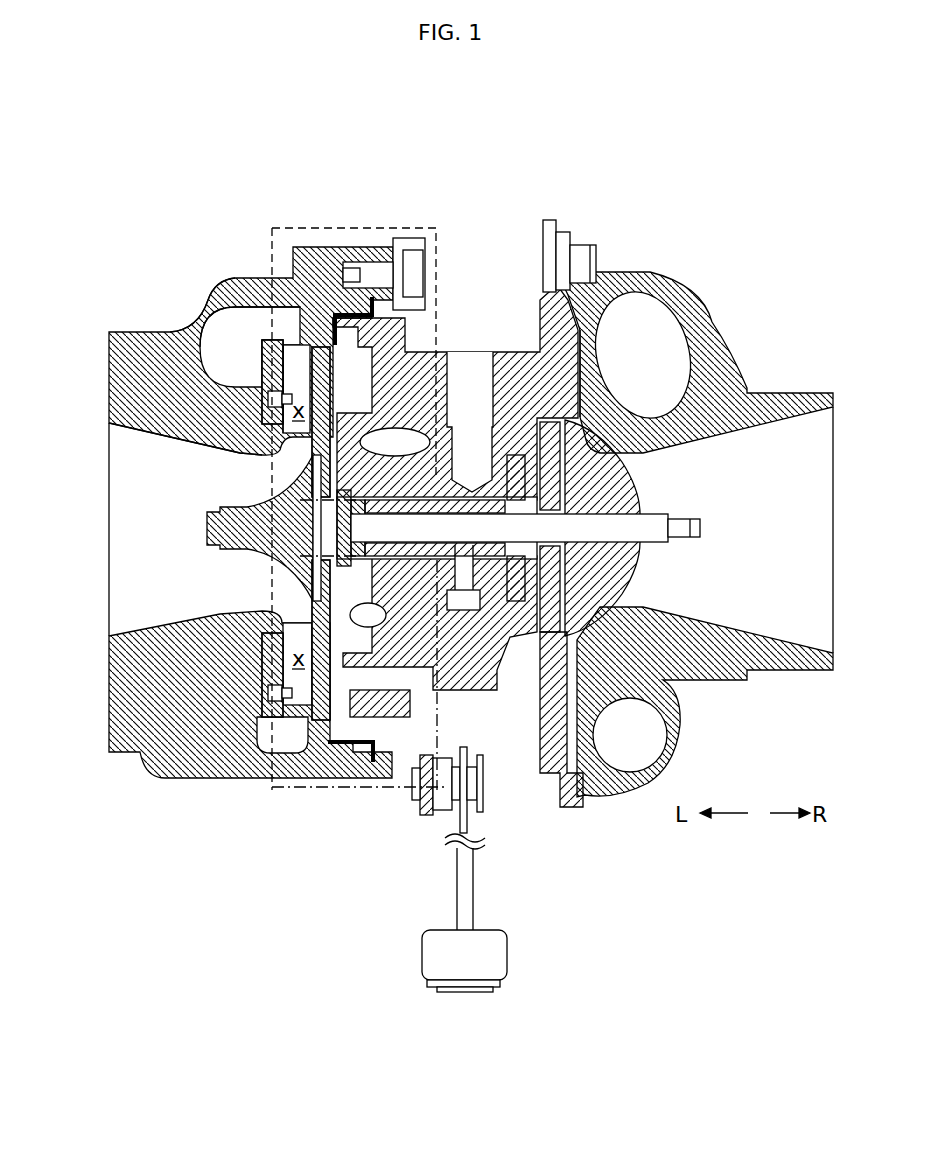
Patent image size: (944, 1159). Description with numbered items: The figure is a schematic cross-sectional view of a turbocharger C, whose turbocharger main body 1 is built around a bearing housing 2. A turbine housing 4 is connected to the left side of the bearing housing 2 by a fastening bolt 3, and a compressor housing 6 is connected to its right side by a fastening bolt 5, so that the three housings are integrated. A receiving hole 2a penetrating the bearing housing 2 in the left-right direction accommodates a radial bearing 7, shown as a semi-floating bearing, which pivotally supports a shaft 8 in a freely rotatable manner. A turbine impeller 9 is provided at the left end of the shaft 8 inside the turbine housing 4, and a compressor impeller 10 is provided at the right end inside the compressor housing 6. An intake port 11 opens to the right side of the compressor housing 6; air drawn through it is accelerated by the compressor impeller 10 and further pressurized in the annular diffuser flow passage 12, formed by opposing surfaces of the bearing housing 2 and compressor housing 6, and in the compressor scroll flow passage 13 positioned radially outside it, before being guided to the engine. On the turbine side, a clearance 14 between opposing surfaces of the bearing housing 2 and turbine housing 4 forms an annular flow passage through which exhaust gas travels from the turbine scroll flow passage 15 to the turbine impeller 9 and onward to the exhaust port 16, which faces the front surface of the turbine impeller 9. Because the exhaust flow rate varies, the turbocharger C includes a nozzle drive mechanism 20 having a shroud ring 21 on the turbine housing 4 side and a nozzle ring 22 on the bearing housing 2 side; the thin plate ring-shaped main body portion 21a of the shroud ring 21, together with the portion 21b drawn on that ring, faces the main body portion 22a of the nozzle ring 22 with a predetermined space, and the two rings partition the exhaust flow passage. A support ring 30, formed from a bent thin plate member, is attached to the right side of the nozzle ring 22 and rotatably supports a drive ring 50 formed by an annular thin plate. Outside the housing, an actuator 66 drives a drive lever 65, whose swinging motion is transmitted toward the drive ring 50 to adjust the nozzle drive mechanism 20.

The turbocharger main body 1 is at (181, 132).
The bearing housing 2 is at (458, 538).
The receiving hole 2a is at (433, 493).
The fastening bolt 3 is at (414, 232).
The turbine housing 4 is at (215, 477).
The fastening bolt 5 is at (545, 224).
The compressor housing 6 is at (720, 478).
The radial bearing 7 is at (462, 548).
The shaft 8 is at (480, 525).
The turbine impeller 9 is at (240, 598).
The compressor impeller 10 is at (650, 482).
The intake port 11 is at (795, 432).
The diffuser flow passage 12 is at (598, 333).
The compressor scroll flow passage 13 is at (654, 365).
The clearance 14 is at (268, 398).
The turbine scroll flow passage 15 is at (245, 357).
The exhaust port 16 is at (172, 440).
The nozzle drive mechanism 20 is at (273, 345).
The shroud ring 21 is at (205, 290).
The main body portion 21a is at (232, 297).
The shroud wall 21b is at (247, 455).
The nozzle ring 22 is at (325, 345).
The main body portion 22a is at (300, 390).
The support ring 30 is at (353, 740).
The drive ring 50 is at (290, 352).
The drive lever 65 is at (440, 725).
The actuator 66 is at (507, 952).
The turbocharger C is at (147, 92).